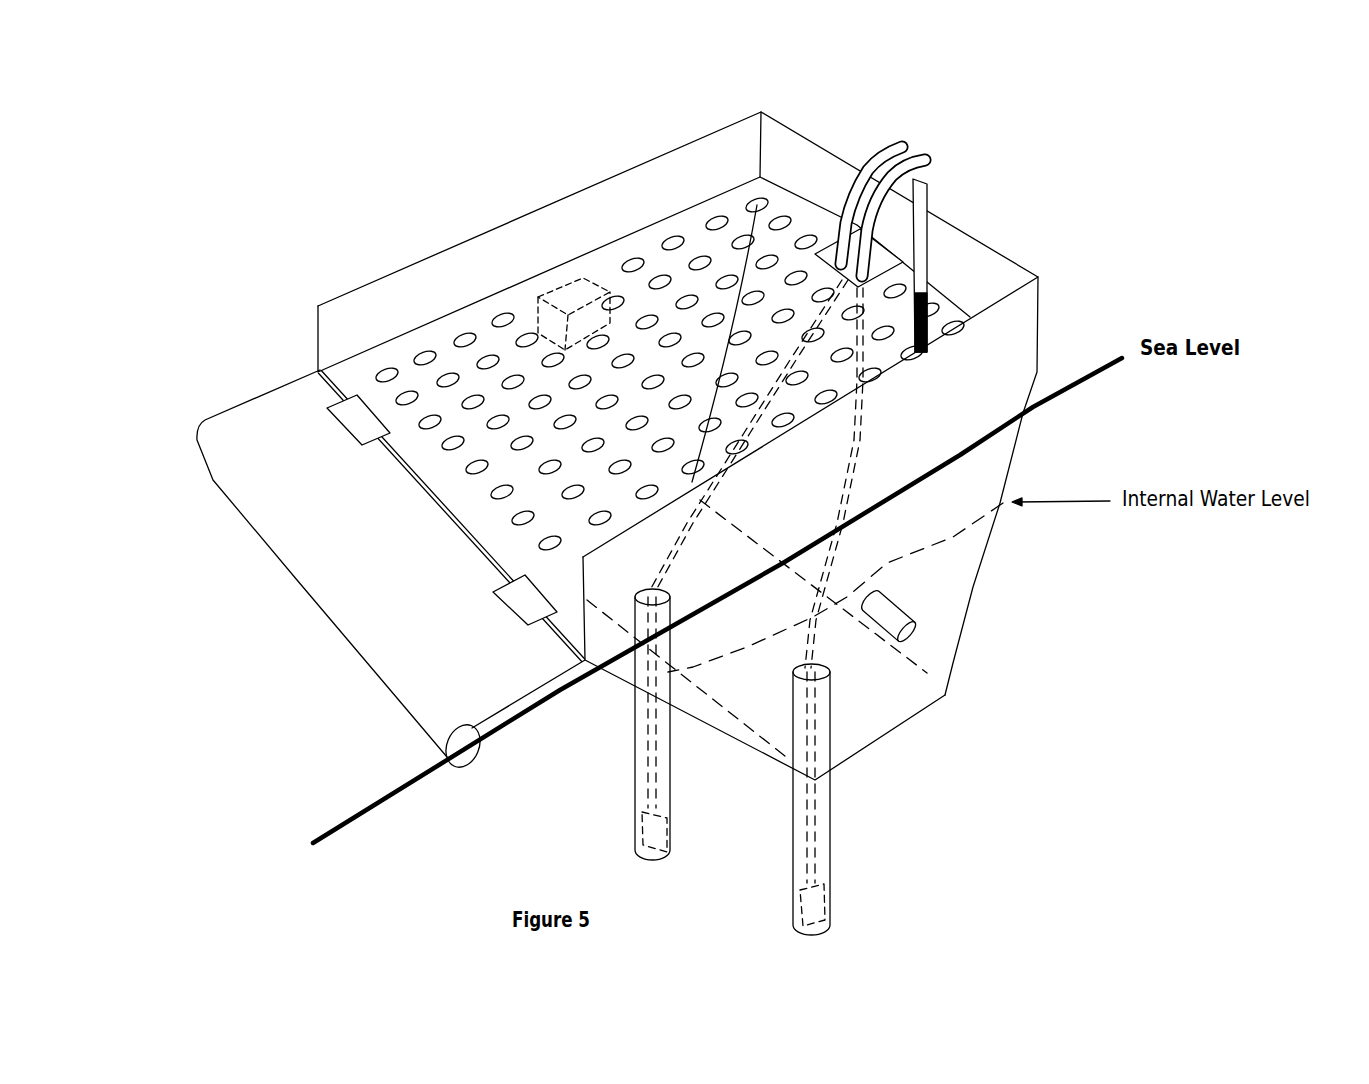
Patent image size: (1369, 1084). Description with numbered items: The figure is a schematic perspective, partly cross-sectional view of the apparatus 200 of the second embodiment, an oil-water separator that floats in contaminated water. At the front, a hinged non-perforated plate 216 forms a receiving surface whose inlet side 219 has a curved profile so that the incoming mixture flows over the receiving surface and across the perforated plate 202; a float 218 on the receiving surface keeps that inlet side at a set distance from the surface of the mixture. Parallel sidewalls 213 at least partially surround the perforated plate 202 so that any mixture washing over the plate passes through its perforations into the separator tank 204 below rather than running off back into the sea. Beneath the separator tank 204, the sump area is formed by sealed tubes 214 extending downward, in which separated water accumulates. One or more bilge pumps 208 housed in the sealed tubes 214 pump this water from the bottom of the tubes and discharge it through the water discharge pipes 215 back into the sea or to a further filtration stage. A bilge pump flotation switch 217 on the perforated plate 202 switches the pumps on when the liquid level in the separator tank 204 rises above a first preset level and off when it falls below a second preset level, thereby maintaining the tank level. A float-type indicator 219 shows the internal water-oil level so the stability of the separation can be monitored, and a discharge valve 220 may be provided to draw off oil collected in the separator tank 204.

The apparatus 200 is at (226, 378).
The perforated plate inlet surface 202 is at (735, 205).
The separator tank 204 is at (947, 586).
The bilge pumps 208 is at (678, 838).
The sidewalls 213 is at (303, 318).
The sealed tubes 214 is at (837, 825).
The discharge pipes 215 is at (928, 143).
The non-perforated plate 216 is at (396, 652).
The bilge pump flotation switch 217 is at (575, 290).
The float 218 is at (470, 753).
The indicator 219 is at (938, 201).
The discharge valve 220 is at (905, 630).